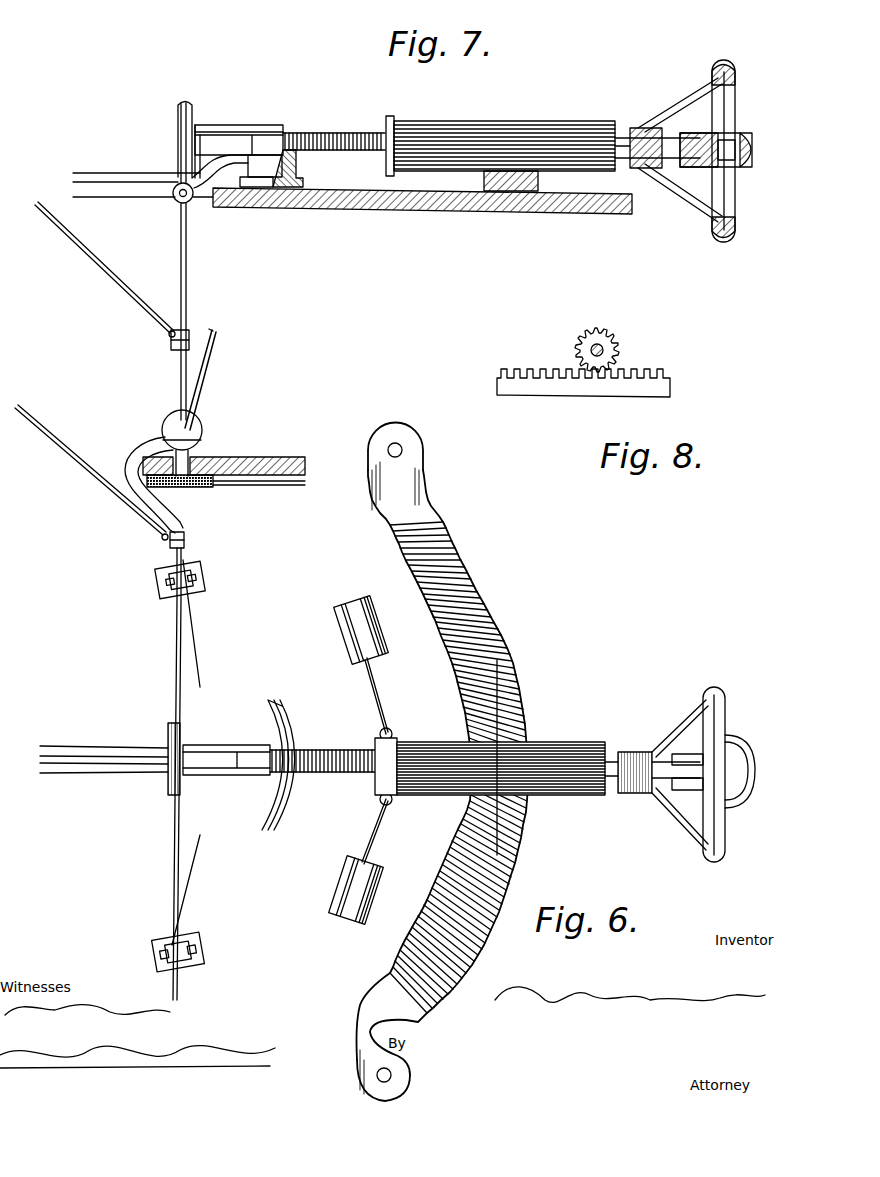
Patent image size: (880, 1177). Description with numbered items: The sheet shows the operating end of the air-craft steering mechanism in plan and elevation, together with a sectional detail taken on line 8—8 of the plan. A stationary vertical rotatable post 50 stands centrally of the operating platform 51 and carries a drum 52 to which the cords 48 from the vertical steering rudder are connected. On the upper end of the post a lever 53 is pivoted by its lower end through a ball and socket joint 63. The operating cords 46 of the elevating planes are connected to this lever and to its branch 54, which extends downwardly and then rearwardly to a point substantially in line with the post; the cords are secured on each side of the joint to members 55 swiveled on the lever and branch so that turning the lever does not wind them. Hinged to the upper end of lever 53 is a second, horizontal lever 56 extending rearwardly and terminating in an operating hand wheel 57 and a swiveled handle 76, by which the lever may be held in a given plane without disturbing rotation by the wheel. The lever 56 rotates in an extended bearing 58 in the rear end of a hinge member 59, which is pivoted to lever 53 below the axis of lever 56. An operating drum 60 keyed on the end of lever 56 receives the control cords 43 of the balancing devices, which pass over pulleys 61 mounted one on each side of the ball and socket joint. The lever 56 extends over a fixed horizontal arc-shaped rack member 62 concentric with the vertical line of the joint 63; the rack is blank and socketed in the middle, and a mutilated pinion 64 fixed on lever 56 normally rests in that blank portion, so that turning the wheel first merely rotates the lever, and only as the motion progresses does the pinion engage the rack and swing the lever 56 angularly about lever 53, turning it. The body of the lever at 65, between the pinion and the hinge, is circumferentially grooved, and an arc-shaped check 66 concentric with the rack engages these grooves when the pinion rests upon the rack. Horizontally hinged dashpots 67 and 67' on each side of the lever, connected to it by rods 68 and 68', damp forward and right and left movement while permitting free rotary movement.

In FIG. 6, the section line 8 is at (530, 668).
In FIG. 6, the control cords 43 is at (187, 300).
In FIG. 6, the operating cords 46 is at (94, 368).
In FIG. 6, the cords 48 is at (280, 486).
In FIG. 6, the rotatable post 50 is at (192, 456).
In FIG. 6, the operating platform 51 is at (268, 458).
In FIG. 6, the drum 52 is at (206, 488).
In FIG. 7, the lever 53 is at (185, 143).
In FIG. 6, the lever 53 is at (180, 268).
In FIG. 6, the branch 54 is at (150, 505).
In FIG. 6, the swiveled members 55 is at (170, 342).
In FIG. 7, the second lever 56 is at (618, 130).
In FIG. 6, the second lever 56 is at (610, 755).
In FIG. 7, the hand wheel 57 is at (726, 60).
In FIG. 6, the hand wheel 57 is at (712, 690).
In FIG. 7, the extended bearing 58 is at (232, 124).
In FIG. 6, the extended bearing 58 is at (220, 775).
In FIG. 7, the hinge member 59 is at (178, 165).
In FIG. 7, the operating drum 60 is at (175, 184).
In FIG. 6, the operating drum 60 is at (200, 733).
In FIG. 6, the pulleys 61 is at (198, 412).
In FIG. 7, the rack member 62 is at (505, 193).
In FIG. 8, the rack member 62 is at (640, 372).
In FIG. 6, the rack member 62 is at (508, 640).
In FIG. 6, the joint 63 is at (165, 430).
In FIG. 7, the mutilated pinion 64 is at (458, 120).
In FIG. 8, the mutilated pinion 64 is at (617, 345).
In FIG. 6, the mutilated pinion 64 is at (545, 797).
In FIG. 7, the grooved body portion 65 is at (326, 134).
In FIG. 6, the grooved body portion 65 is at (310, 750).
In FIG. 7, the arc shaped check 66 is at (305, 170).
In FIG. 6, the arc shaped check 66 is at (283, 790).
In FIG. 6, the dashpot 67 is at (343, 630).
In FIG. 6, the dashpot 67' is at (340, 890).
In FIG. 6, the rod 68 is at (389, 699).
In FIG. 6, the rod 68' is at (389, 828).
In FIG. 7, the swiveled handle 76 is at (738, 140).